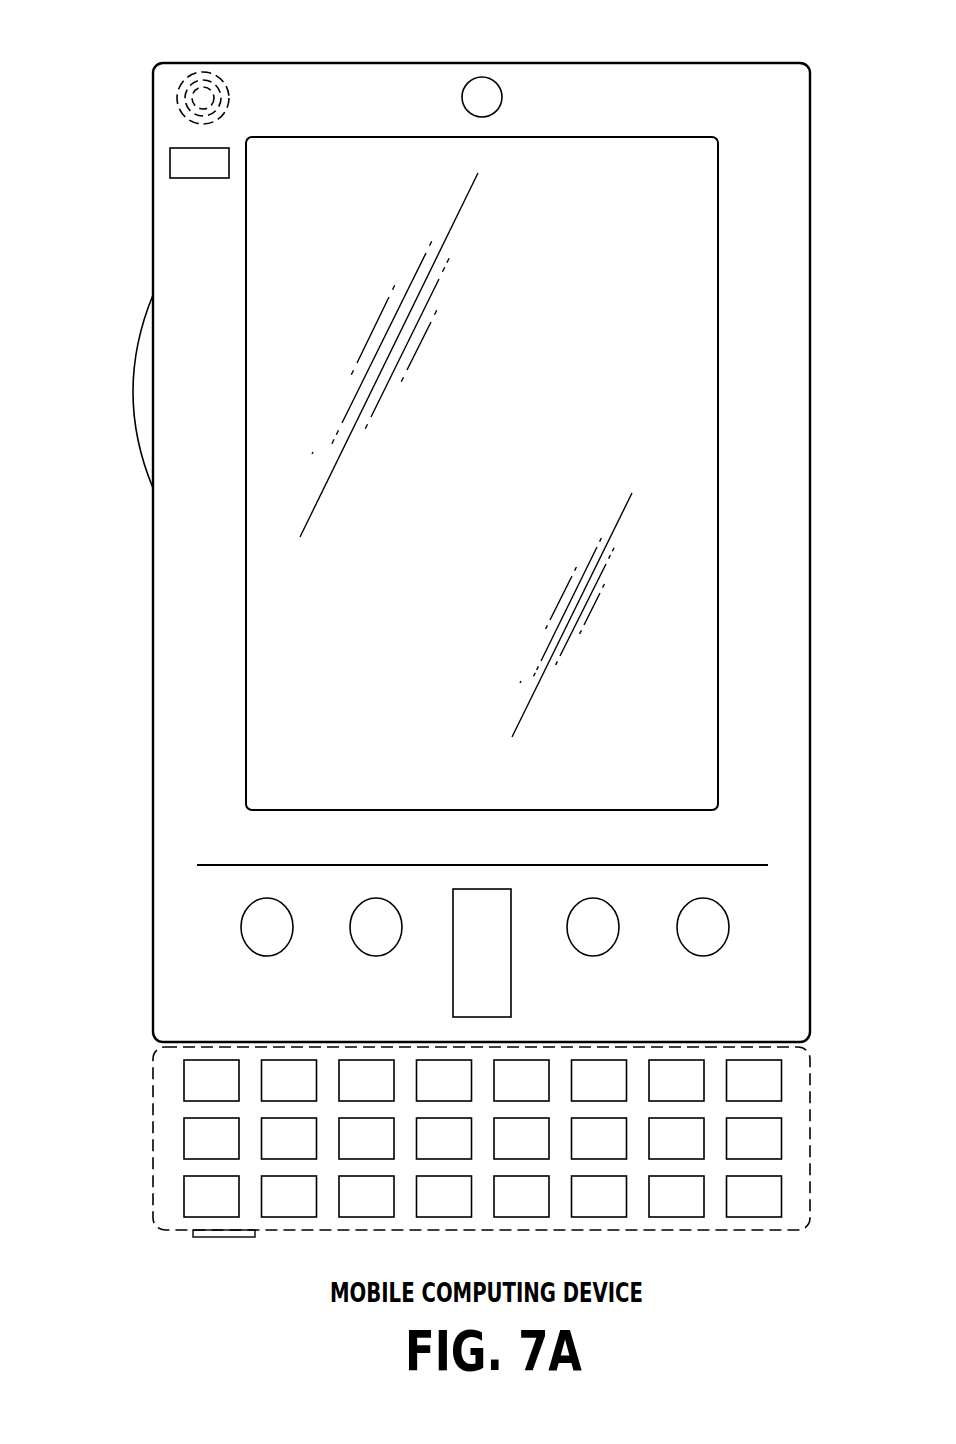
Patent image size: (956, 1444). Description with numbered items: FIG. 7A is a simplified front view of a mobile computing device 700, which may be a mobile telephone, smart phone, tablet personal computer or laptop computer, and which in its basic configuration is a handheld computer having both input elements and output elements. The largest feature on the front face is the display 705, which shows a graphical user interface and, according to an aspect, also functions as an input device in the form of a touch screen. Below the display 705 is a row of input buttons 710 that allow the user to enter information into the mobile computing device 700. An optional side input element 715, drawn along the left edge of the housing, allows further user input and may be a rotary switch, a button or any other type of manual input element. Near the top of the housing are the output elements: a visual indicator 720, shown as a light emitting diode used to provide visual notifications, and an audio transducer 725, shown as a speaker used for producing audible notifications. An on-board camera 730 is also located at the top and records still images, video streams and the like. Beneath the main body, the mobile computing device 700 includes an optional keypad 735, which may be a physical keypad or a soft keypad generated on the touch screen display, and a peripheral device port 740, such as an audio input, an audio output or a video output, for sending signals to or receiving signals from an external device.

The mobile computing device 700 is at (776, 60).
The display 705 is at (270, 648).
The input buttons 710 is at (266, 957).
The side input element 715 is at (130, 393).
The visual indicator 720 is at (168, 163).
The audio transducer 725 is at (177, 103).
The on-board camera 730 is at (483, 77).
The keypad 735 is at (163, 1138).
The peripheral device port 740 is at (218, 1238).